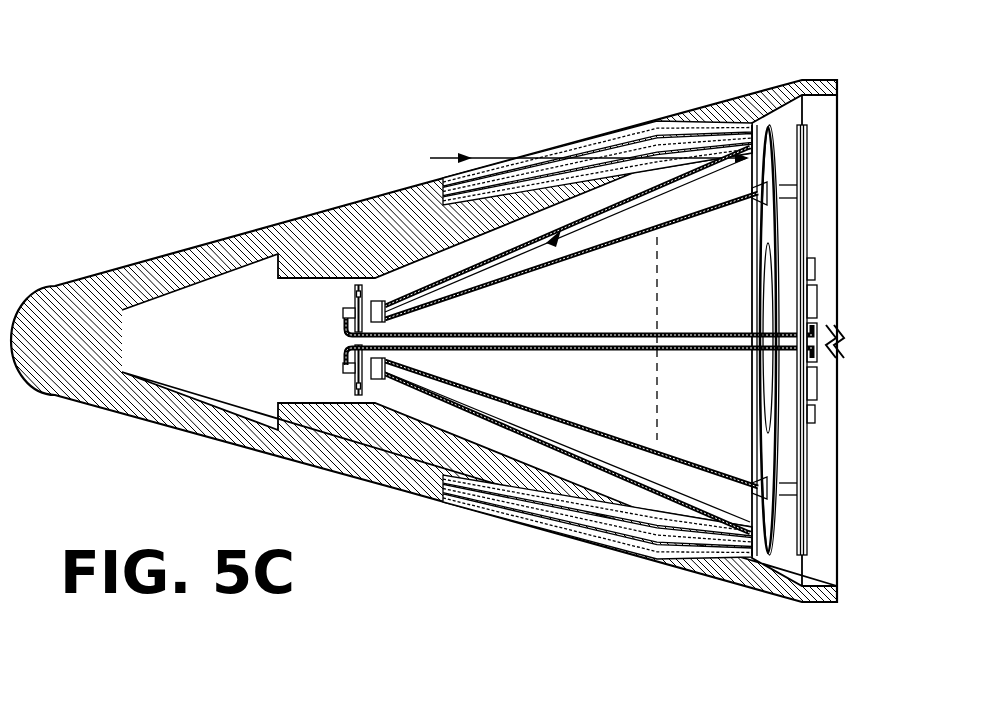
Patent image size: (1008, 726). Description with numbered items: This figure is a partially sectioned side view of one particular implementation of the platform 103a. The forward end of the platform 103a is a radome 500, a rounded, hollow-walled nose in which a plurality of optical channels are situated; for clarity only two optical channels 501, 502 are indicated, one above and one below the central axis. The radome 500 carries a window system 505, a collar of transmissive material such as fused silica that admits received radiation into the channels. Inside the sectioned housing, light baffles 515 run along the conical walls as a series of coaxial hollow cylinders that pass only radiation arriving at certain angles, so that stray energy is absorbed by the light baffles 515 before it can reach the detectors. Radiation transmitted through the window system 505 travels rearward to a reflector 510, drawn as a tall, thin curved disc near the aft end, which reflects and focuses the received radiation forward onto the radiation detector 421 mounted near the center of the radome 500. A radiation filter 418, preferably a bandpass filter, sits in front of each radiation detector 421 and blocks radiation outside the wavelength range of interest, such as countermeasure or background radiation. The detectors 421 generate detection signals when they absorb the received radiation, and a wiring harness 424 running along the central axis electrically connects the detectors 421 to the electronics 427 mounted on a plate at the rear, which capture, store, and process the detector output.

The platform 103a is at (747, 18).
The radome 500 is at (150, 258).
The optical channel 501 is at (456, 557).
The optical channel 502 is at (418, 130).
The window system 505 is at (428, 68).
The reflector 510 is at (762, 444).
The light baffles 515 is at (567, 145).
The radiation filter 418 is at (394, 322).
The radiation detector 421 is at (352, 303).
The wiring harness 424 is at (508, 333).
The electronics 427 is at (828, 266).